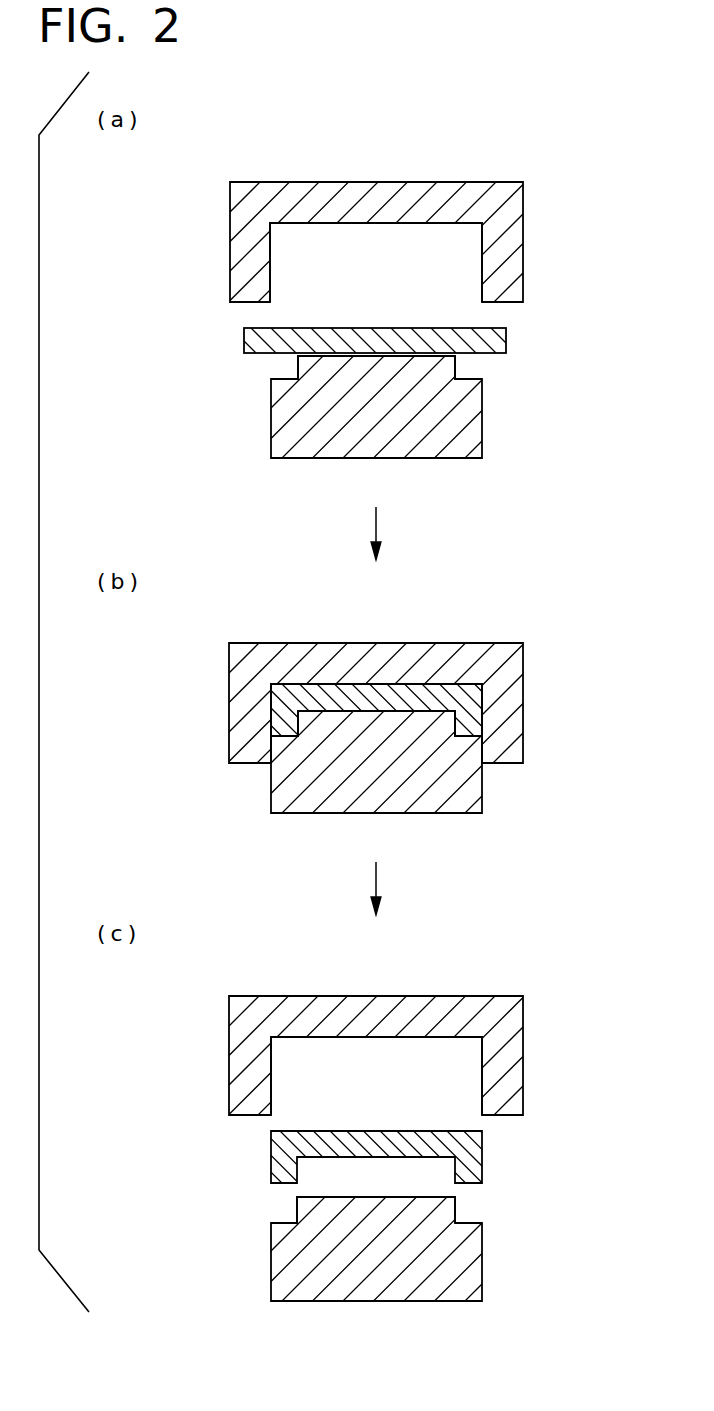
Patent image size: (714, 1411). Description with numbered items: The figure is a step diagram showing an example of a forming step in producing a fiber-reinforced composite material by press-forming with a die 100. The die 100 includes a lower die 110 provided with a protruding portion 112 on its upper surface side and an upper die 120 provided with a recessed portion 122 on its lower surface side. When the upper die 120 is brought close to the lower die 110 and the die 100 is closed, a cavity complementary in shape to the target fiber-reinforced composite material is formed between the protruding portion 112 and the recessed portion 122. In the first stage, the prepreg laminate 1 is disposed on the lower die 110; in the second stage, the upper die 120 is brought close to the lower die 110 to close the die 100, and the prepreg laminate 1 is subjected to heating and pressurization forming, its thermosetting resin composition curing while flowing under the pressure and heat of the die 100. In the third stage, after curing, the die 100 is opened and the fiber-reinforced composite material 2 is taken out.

The die 100 is at (357, 705).
The upper die 120 is at (562, 1033).
The recessed portion 122 is at (562, 1068).
The lower die 110 is at (519, 1268).
The protruding portion 112 is at (513, 1211).
The prepreg laminate 1 is at (418, 696).
The fiber-reinforced composite material 2 is at (482, 1157).